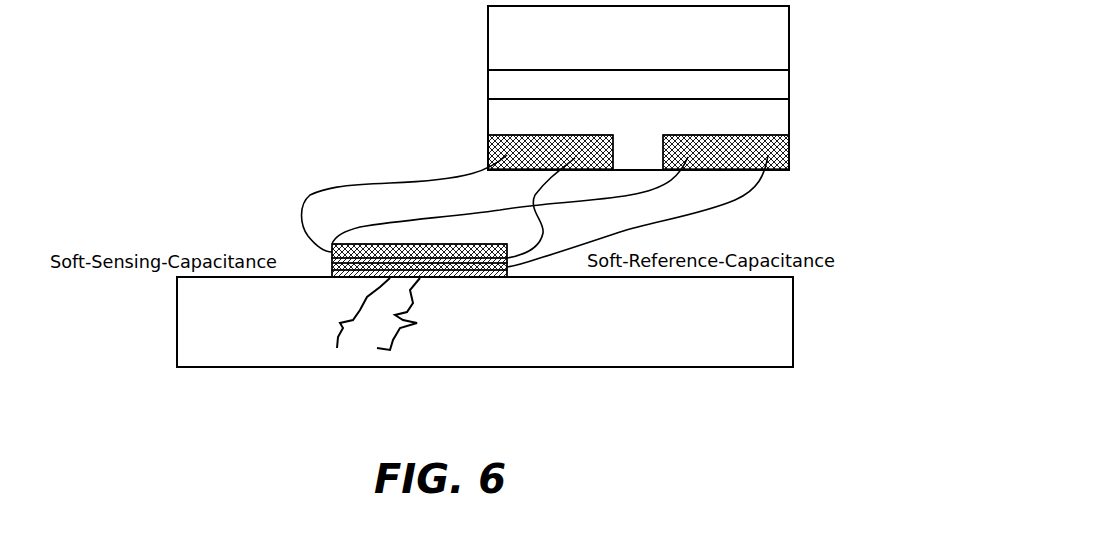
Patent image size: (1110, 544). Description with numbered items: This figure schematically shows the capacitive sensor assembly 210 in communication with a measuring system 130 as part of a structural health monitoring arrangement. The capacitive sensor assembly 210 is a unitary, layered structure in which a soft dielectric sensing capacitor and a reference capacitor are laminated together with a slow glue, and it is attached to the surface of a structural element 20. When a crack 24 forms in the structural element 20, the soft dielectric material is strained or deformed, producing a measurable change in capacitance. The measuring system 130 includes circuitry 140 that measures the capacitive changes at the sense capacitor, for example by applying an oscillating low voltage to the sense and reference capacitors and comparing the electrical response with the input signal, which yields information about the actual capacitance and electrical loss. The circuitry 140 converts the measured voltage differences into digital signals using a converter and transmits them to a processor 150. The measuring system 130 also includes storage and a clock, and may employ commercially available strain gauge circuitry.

The processor 150 is at (770, 50).
The measuring system 130 is at (770, 82).
The circuitry 140 is at (770, 106).
The capacitive sensor assembly 210 is at (273, 226).
The structural element 20 is at (758, 352).
The crack 24 is at (343, 337).